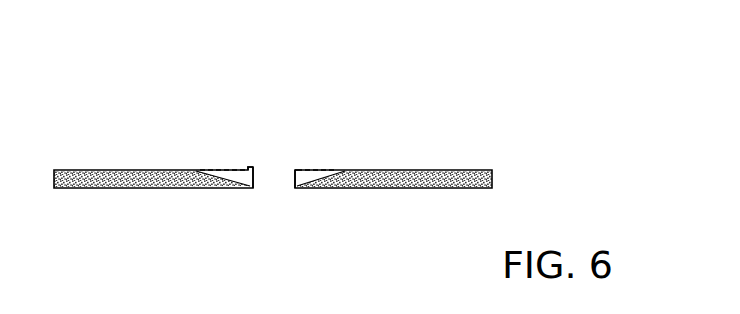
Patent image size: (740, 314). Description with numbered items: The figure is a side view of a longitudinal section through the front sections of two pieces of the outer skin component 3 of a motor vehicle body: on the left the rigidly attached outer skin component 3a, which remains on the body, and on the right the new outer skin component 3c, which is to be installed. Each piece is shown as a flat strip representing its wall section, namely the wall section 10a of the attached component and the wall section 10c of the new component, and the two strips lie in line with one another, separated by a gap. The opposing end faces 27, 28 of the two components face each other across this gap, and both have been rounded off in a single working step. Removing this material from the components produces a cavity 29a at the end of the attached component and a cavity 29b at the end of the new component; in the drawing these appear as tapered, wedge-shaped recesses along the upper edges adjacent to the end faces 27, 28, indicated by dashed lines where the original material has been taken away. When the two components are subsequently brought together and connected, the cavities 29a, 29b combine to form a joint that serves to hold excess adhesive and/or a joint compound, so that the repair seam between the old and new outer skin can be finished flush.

The outer skin component 3 is at (277, 121).
The outer skin component 3a is at (153, 121).
The wall section 10a is at (102, 168).
The new outer skin component 3c is at (397, 124).
The wall section 10c is at (422, 170).
The end face 27 is at (249, 188).
The end face 28 is at (297, 188).
The cavity 29a is at (243, 168).
The cavity 29b is at (303, 168).